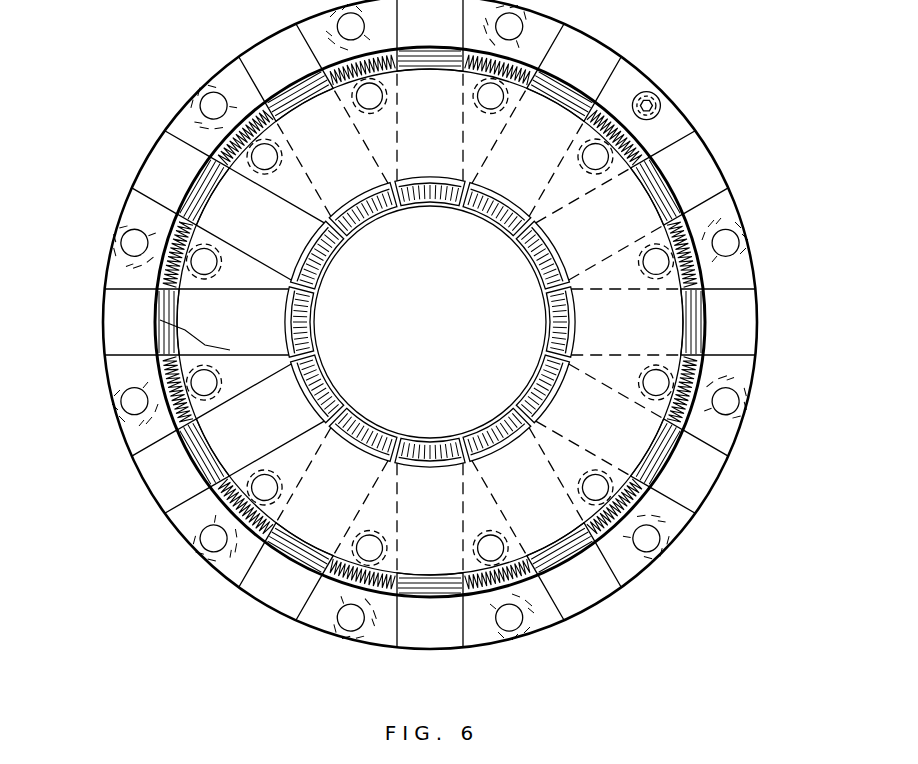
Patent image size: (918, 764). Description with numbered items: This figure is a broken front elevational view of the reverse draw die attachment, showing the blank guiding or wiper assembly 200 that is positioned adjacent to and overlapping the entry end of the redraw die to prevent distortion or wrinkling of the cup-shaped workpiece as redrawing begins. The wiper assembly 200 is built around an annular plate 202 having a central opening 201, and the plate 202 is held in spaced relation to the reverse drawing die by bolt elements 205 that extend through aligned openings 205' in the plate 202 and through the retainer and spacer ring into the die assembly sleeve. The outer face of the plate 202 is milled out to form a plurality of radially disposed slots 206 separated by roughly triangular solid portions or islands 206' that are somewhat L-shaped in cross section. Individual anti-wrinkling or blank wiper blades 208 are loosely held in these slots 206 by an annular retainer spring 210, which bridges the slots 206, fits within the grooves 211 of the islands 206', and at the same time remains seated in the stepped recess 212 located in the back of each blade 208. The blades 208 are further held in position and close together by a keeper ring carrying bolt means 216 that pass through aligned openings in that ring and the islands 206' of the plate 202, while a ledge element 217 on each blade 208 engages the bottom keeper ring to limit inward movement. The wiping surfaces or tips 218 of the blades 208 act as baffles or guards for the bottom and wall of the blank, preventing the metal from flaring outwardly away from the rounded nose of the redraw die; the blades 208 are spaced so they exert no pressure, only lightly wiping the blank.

The wiper assembly 200 is at (124, 508).
The opening 201 is at (447, 305).
The annular plate 202 is at (683, 131).
The bolt elements 205 is at (697, 99).
The openings 205' is at (430, 324).
The radially disposed slots 206 is at (407, 323).
The islands 206' is at (407, 192).
The wiper blades 208 is at (513, 257).
The annular retainer spring 210 is at (165, 326).
The grooves 211 is at (230, 136).
The stepped recess 212 is at (162, 306).
The bolt means 216 is at (278, 140).
The ledge element 217 is at (663, 173).
The wiping surfaces or tips 218 is at (318, 322).